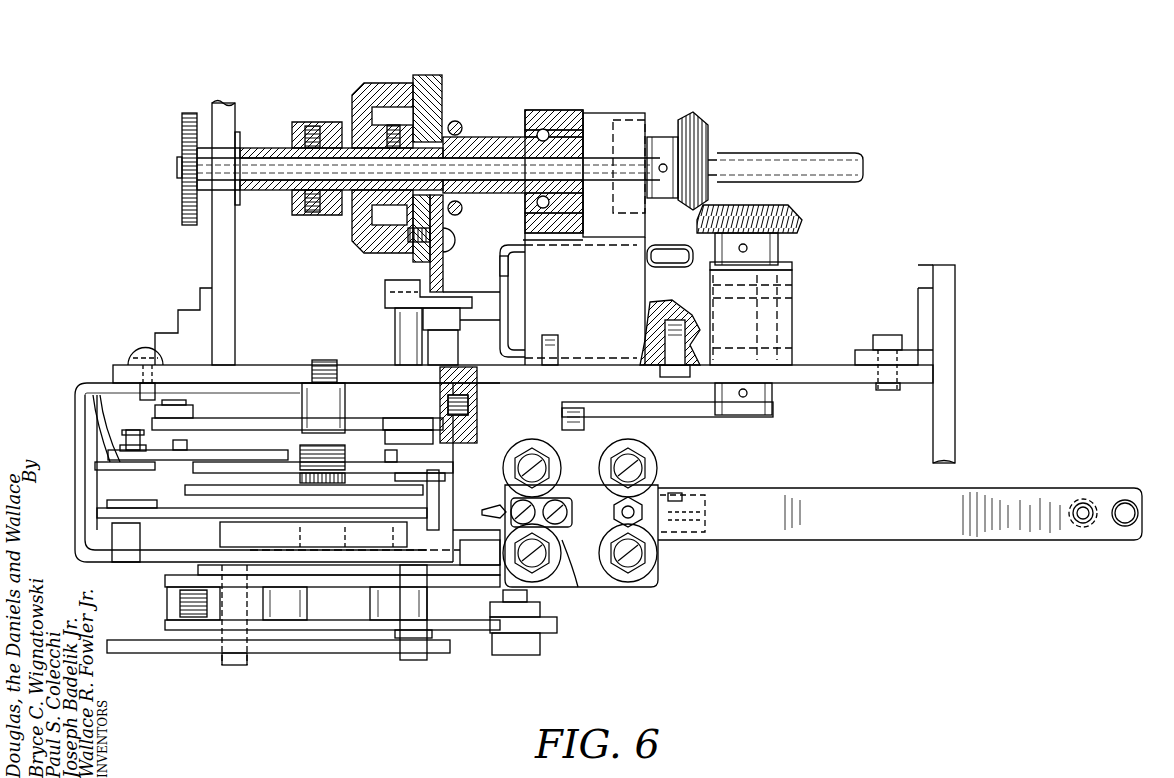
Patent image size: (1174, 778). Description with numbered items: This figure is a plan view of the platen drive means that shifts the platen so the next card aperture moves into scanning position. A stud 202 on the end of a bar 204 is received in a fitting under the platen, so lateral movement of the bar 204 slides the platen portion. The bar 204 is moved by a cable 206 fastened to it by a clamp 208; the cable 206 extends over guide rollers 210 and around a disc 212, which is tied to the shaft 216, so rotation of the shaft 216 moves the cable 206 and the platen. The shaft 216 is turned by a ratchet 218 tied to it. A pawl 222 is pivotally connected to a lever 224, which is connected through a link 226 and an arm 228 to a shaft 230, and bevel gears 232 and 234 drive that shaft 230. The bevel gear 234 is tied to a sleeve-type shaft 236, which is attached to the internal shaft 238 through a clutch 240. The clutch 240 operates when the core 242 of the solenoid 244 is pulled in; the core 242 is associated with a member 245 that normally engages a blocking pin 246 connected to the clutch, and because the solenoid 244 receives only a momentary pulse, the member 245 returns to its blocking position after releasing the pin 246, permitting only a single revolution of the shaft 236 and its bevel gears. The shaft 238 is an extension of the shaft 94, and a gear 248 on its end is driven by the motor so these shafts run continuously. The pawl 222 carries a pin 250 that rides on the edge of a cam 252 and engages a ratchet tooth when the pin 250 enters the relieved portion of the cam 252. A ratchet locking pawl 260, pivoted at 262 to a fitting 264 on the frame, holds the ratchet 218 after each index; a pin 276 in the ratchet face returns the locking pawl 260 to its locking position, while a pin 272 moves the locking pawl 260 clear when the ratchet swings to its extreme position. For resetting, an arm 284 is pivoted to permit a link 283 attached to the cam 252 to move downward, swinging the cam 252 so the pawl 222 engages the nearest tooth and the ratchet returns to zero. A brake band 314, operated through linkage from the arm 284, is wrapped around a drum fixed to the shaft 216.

The shaft 94 is at (805, 160).
The stud 202 is at (1122, 520).
The bar 204 is at (885, 535).
The cable 206 is at (497, 520).
The clamp 208 is at (580, 590).
The guide rollers 210 is at (82, 514).
The disc 212 is at (193, 508).
The shaft 216 is at (322, 360).
The ratchet 218 is at (285, 462).
The pawl 222 is at (412, 478).
The lever 224 is at (278, 430).
The link 226 is at (393, 428).
The arm 228 is at (678, 410).
The shaft 230 is at (792, 300).
The bevel gear 232 is at (800, 222).
The bevel gear 234 is at (690, 115).
The sleeve-type shaft 236 is at (508, 135).
The internal shaft 238 is at (478, 168).
The clutch 240 is at (378, 83).
The core 242 is at (485, 300).
The solenoid 244 is at (506, 258).
The member 245 is at (410, 282).
The blocking pin 246 is at (430, 270).
The gear 248 is at (182, 128).
The pin 250 is at (432, 450).
The cam 252 is at (227, 490).
The ratchet locking pawl 260 is at (132, 455).
The pivot 262 is at (98, 448).
The fitting 264 is at (92, 462).
The pin 272 is at (386, 456).
The pin 276 is at (230, 450).
The link 283 is at (438, 500).
The arm 284 is at (168, 650).
The band 314 is at (220, 533).